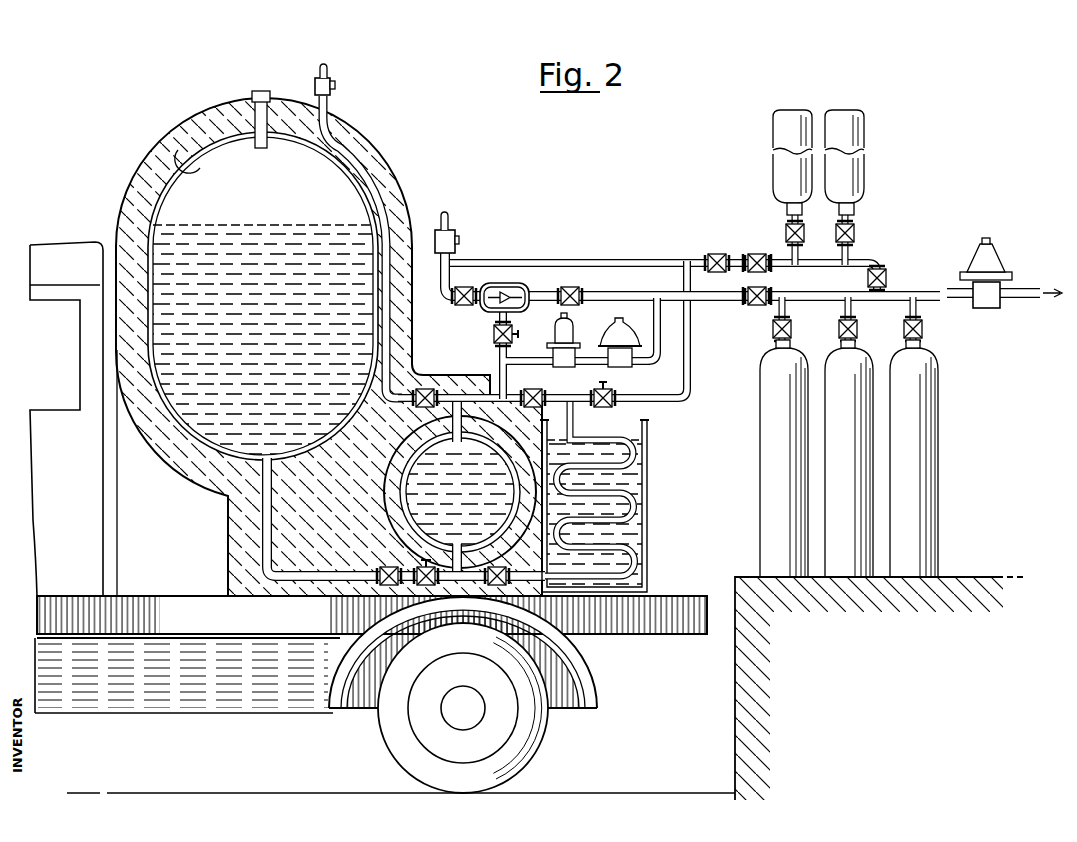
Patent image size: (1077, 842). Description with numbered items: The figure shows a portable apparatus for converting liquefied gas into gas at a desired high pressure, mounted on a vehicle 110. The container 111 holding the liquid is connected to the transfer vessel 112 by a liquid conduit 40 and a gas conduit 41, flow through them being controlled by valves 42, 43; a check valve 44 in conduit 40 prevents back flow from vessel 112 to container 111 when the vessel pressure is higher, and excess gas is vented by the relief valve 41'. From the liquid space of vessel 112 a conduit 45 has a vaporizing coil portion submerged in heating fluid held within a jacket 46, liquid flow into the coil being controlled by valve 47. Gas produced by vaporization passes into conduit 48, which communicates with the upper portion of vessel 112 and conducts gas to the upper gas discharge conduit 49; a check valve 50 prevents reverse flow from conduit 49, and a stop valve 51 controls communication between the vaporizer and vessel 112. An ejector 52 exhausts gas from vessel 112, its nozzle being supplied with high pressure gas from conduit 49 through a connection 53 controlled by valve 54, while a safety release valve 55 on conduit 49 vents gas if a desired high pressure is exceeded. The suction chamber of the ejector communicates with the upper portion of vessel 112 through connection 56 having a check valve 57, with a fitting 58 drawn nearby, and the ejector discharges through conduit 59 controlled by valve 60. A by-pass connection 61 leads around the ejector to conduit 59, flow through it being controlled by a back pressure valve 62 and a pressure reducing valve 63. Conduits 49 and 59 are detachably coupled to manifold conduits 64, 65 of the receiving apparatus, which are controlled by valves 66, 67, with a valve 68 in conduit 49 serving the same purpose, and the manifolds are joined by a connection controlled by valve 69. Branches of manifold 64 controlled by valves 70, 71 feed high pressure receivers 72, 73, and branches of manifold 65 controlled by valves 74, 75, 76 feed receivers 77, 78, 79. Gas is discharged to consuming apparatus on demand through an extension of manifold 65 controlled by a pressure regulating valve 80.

The liquid conduit 40 is at (263, 528).
The gas conduit 41 is at (363, 247).
The relief valve 41' is at (343, 79).
The valve 42 is at (384, 597).
The valve 43 is at (426, 389).
The check valve 44 is at (372, 636).
The conduit with vaporizing coil portion 45 is at (626, 562).
The jacket 46 is at (645, 534).
The valve 47 is at (500, 586).
The conduit 48 is at (690, 392).
The upper gas discharge conduit 49 is at (620, 259).
The check valve 50 is at (612, 406).
The stop valve 51 is at (534, 396).
The ejector 52 is at (504, 283).
The connection 53 is at (441, 290).
The valve 54 is at (462, 306).
The safety release valve 55 is at (453, 235).
The connection 56 is at (500, 362).
The check valve 57 is at (494, 334).
The gauge mount 58 is at (550, 357).
The conduit 59 is at (720, 302).
The valve 60 is at (570, 288).
The by-pass connection 61 is at (661, 350).
The back pressure valve 62 is at (556, 327).
The pressure reducing valve 63 is at (612, 329).
The manifold conduit 64 is at (862, 259).
The manifold conduit 65 is at (951, 289).
The valve 66 is at (759, 253).
The valve 67 is at (763, 304).
The valve 68 is at (717, 253).
The valve 69 is at (888, 277).
The valve 70 is at (803, 232).
The valve 71 is at (854, 233).
The high pressure receiver 72 is at (790, 110).
The high pressure receiver 73 is at (846, 110).
The valve 74 is at (793, 329).
The valve 75 is at (859, 329).
The valve 76 is at (924, 329).
The receiver 77 is at (768, 473).
The receiver 78 is at (855, 470).
The receiver 79 is at (920, 468).
The pressure regulating valve 80 is at (993, 266).
The vehicle 110 is at (176, 600).
The container 111 is at (158, 142).
The transfer vessel 112 is at (510, 548).